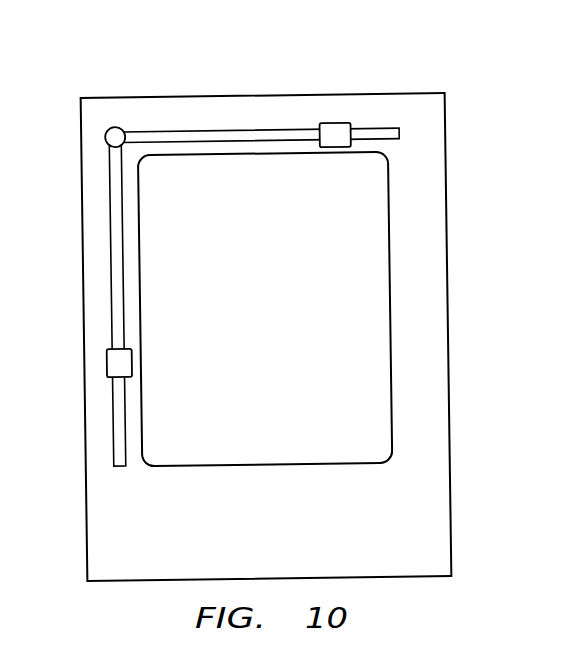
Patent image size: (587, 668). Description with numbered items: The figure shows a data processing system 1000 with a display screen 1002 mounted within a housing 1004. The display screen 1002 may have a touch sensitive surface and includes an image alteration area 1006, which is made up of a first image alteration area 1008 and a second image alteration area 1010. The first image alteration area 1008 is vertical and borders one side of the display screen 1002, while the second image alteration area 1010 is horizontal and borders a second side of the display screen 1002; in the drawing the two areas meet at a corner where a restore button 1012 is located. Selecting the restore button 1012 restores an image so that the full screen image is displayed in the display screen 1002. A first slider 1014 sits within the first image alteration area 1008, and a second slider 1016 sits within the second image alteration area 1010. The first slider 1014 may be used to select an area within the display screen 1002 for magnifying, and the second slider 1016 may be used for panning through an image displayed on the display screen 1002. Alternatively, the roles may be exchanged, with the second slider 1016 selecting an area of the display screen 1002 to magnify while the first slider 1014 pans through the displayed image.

The data processing system 1000 is at (456, 85).
The display screen 1002 is at (291, 316).
The housing 1004 is at (292, 534).
The image alteration area 1006 is at (205, 260).
The first image alteration area 1008 is at (119, 416).
The second image alteration area 1010 is at (210, 136).
The restore button 1012 is at (116, 124).
The first slider 1014 is at (106, 361).
The second slider 1016 is at (338, 124).